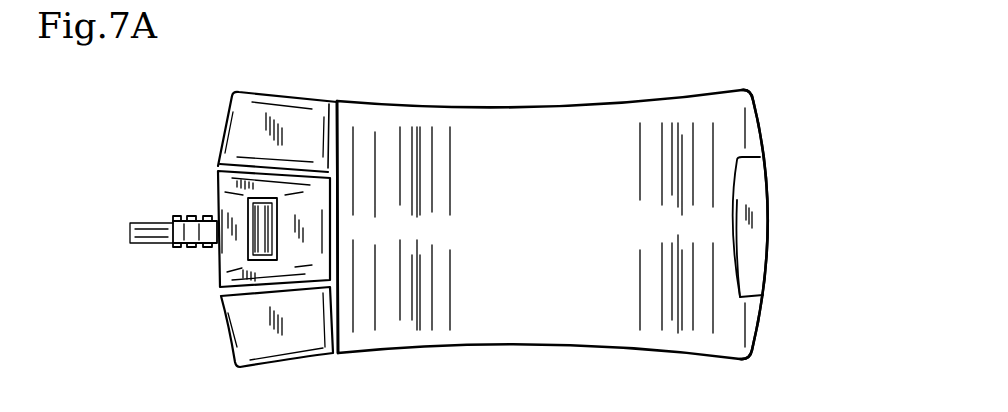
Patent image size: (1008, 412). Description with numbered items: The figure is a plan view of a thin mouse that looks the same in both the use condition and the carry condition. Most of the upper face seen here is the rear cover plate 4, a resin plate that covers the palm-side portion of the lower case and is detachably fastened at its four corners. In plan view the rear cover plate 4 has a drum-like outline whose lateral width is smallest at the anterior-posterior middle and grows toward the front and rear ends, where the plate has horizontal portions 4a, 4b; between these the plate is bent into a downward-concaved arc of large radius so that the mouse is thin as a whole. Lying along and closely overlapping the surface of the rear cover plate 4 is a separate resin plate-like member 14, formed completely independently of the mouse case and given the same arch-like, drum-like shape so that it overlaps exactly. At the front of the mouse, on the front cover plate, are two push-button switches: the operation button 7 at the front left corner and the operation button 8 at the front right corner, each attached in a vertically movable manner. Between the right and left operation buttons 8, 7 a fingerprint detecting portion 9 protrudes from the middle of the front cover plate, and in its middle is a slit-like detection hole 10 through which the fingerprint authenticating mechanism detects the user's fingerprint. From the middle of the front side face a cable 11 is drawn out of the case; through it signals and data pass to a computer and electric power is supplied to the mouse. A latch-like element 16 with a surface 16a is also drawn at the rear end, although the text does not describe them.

The rear cover plate 4 is at (591, 194).
The horizontal portion 4a is at (342, 175).
The horizontal portion 4b is at (750, 142).
The operation button 7 is at (243, 330).
The operation button 8 is at (248, 124).
The fingerprint detecting portion 9 is at (220, 184).
The detection hole 10 is at (262, 247).
The cable 11 is at (143, 252).
The plate-like member 14 is at (520, 130).
The latch 16 is at (776, 212).
The latch surface 16a is at (750, 247).